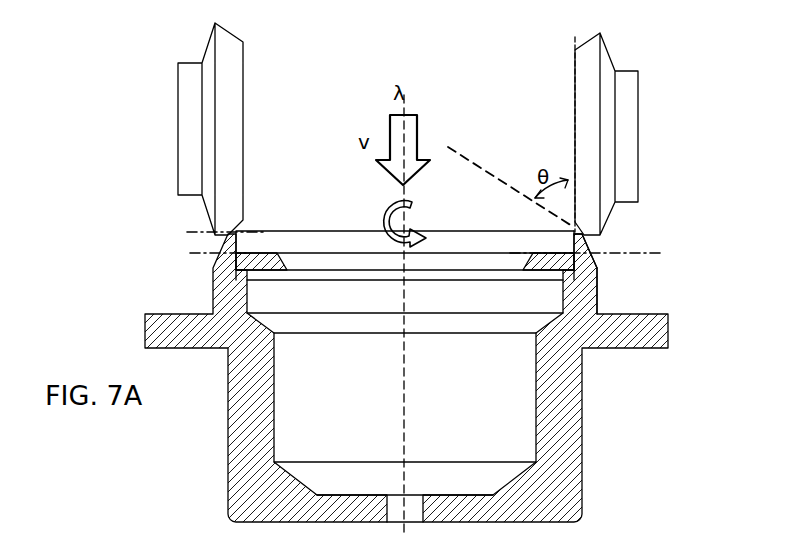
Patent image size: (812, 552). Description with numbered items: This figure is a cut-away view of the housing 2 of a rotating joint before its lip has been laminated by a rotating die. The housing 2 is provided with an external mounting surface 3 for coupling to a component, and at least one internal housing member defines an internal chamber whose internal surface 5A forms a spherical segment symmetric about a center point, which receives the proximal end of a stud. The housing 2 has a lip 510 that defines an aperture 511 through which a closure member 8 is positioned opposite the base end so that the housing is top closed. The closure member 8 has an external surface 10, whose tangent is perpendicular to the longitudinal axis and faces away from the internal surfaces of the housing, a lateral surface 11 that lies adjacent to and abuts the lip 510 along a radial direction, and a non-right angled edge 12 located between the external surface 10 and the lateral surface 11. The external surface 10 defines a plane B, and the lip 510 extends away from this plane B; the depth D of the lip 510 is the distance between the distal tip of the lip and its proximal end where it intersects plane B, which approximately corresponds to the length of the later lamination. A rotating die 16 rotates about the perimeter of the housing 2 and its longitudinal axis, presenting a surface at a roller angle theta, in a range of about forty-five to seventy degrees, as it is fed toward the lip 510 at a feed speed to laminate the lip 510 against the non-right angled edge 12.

The housing 2 is at (250, 383).
The external mounting surface 3 is at (582, 423).
The internal surface 5A is at (533, 397).
The closure member 8 is at (553, 270).
The external surface 10 is at (578, 265).
The lateral surface 11 is at (578, 260).
The non-right angled edge 12 is at (576, 257).
The rotating die 16 is at (190, 140).
The lip 510 is at (577, 243).
The aperture 511 is at (340, 230).
The depth of lip D is at (228, 244).
The plane B is at (598, 265).